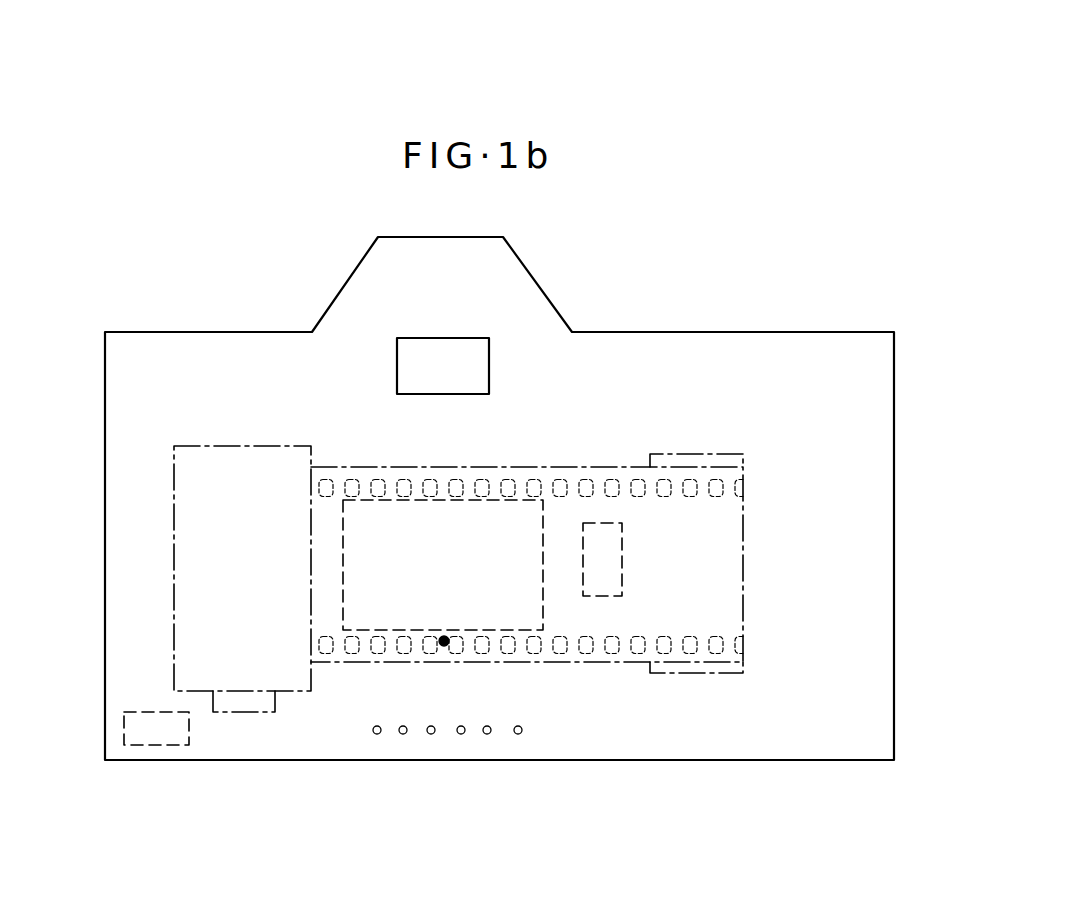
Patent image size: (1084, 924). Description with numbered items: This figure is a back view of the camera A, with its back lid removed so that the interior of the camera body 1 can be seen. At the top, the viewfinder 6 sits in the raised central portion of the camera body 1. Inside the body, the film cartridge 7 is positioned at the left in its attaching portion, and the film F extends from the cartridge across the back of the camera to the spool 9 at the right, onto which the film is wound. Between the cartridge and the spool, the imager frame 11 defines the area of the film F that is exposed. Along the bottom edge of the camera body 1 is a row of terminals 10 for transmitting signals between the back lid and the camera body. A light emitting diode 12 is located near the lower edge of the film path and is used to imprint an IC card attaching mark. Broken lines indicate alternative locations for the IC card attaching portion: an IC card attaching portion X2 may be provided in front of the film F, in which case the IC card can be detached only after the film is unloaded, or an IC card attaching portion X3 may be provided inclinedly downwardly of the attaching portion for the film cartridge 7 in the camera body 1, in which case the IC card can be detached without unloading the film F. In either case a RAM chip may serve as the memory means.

The camera A is at (297, 295).
The camera body 1 is at (643, 332).
The viewfinder 6 is at (470, 353).
The film cartridge 7 is at (174, 462).
The spool 9 is at (740, 454).
The terminal 10 is at (434, 734).
The imager frame 11 is at (543, 593).
The light emitting diode 12 is at (444, 645).
The film F is at (733, 537).
The IC card attaching portion X2 is at (622, 574).
The IC card attaching portion X3 is at (148, 748).